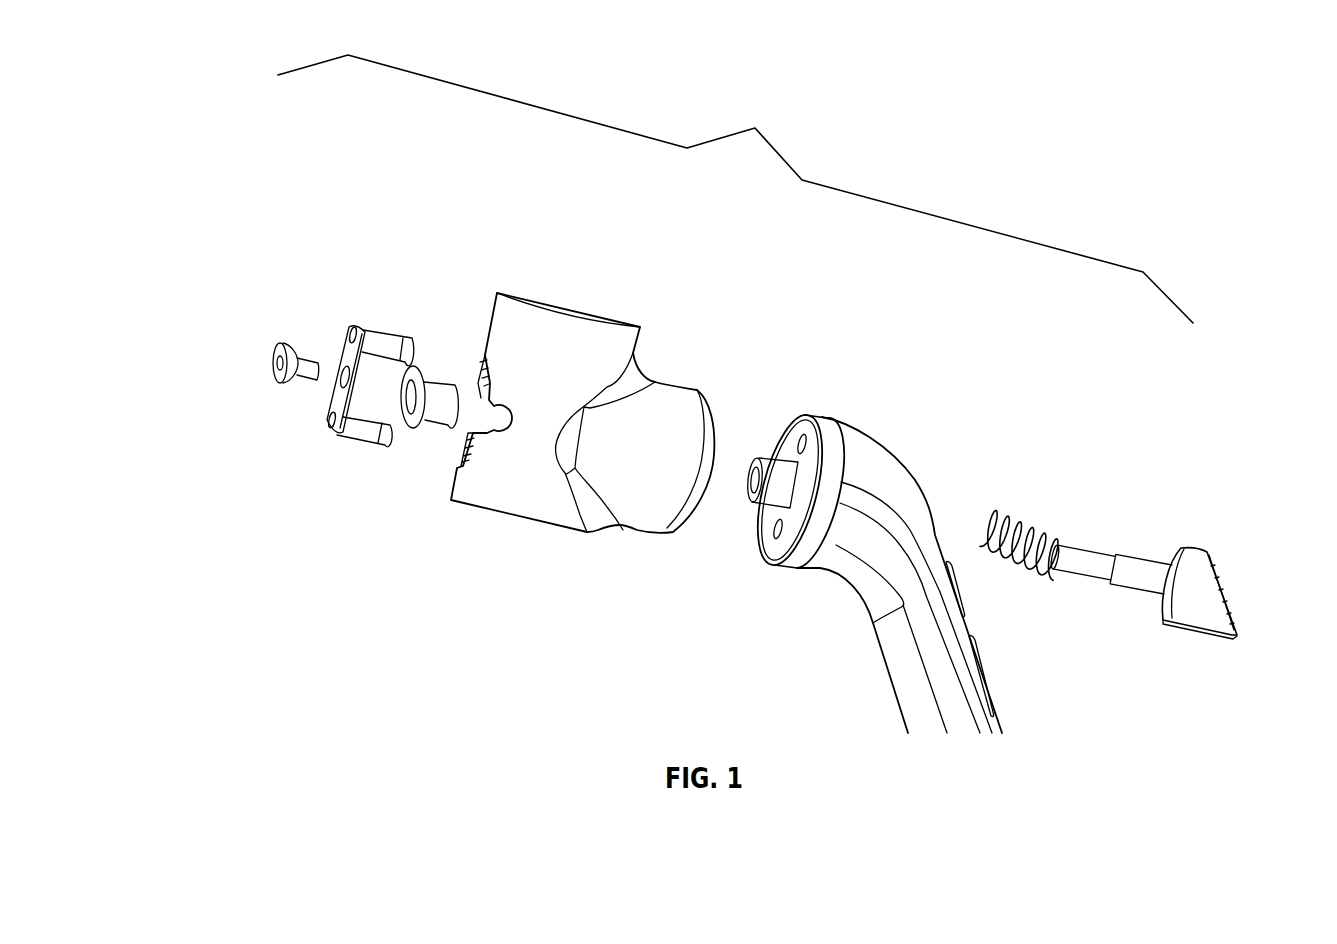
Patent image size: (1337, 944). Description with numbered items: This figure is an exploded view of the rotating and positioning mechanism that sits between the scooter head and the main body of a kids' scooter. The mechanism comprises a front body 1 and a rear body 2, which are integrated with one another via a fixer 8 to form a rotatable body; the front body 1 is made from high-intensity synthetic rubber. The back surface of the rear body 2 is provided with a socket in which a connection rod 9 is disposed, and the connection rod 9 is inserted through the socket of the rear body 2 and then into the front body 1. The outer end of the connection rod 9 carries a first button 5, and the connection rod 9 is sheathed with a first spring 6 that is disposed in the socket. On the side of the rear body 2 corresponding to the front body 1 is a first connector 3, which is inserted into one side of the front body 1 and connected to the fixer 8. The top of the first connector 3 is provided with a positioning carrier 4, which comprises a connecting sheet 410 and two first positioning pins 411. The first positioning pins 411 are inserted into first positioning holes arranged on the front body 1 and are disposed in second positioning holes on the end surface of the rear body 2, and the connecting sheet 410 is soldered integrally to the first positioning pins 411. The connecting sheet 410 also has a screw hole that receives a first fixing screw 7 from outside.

The front body 1 is at (640, 327).
The rear body 2 is at (834, 420).
The first connector 3 is at (443, 383).
The positioning carrier 4 is at (290, 353).
The connecting sheet 410 is at (335, 398).
The first positioning pins 411 is at (363, 443).
The first button 5 is at (1193, 547).
The first spring 6 is at (1017, 513).
The first fixing screw 7 is at (293, 343).
The fixer 8 is at (770, 453).
The connection rod 9 is at (1113, 557).